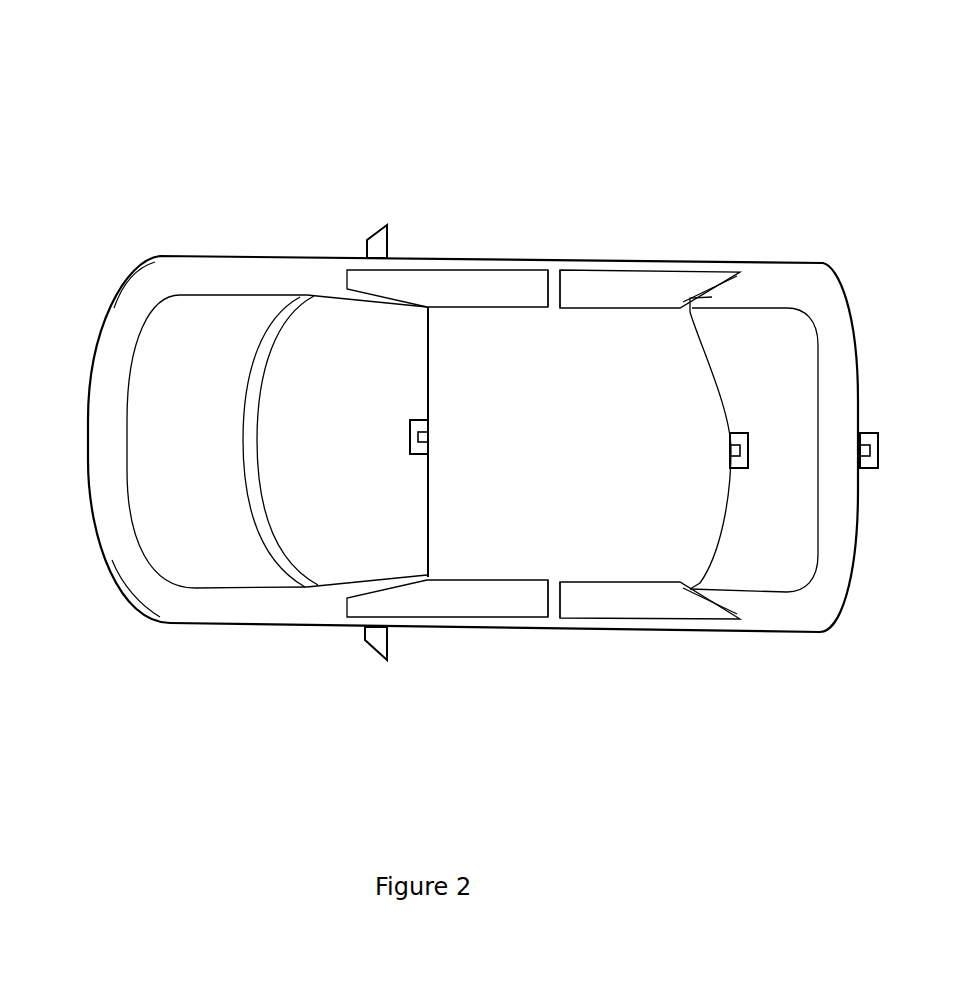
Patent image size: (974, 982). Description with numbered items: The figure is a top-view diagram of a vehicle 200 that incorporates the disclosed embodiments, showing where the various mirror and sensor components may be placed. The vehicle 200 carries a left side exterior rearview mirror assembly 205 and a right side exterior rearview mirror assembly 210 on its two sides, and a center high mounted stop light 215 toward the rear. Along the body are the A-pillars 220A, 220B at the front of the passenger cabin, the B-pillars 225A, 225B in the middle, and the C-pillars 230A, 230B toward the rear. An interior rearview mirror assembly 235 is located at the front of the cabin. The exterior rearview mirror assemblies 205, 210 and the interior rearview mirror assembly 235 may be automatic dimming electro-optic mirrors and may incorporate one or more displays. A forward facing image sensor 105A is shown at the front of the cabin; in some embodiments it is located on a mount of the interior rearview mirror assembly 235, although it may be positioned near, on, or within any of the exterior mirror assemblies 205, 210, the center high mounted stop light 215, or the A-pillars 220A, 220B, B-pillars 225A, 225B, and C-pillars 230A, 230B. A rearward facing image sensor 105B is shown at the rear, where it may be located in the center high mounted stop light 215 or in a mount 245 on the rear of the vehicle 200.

The vehicle 200 is at (573, 70).
The left side exterior rearview mirror assembly 205 is at (390, 637).
The right side exterior rearview mirror assembly 210 is at (392, 248).
The center high mounted stop light 215 is at (738, 433).
The A-pillar 220A is at (377, 578).
The A-pillar 220B is at (381, 308).
The B-pillar 225A is at (690, 580).
The B-pillar 225B is at (740, 272).
The C-pillar 230A is at (552, 578).
The C-pillar 230B is at (553, 300).
The interior rearview mirror assembly 235 is at (410, 438).
The mount 245 is at (868, 433).
The forward facing image sensor 105A is at (415, 422).
The rearward facing image sensor 105B is at (733, 460).